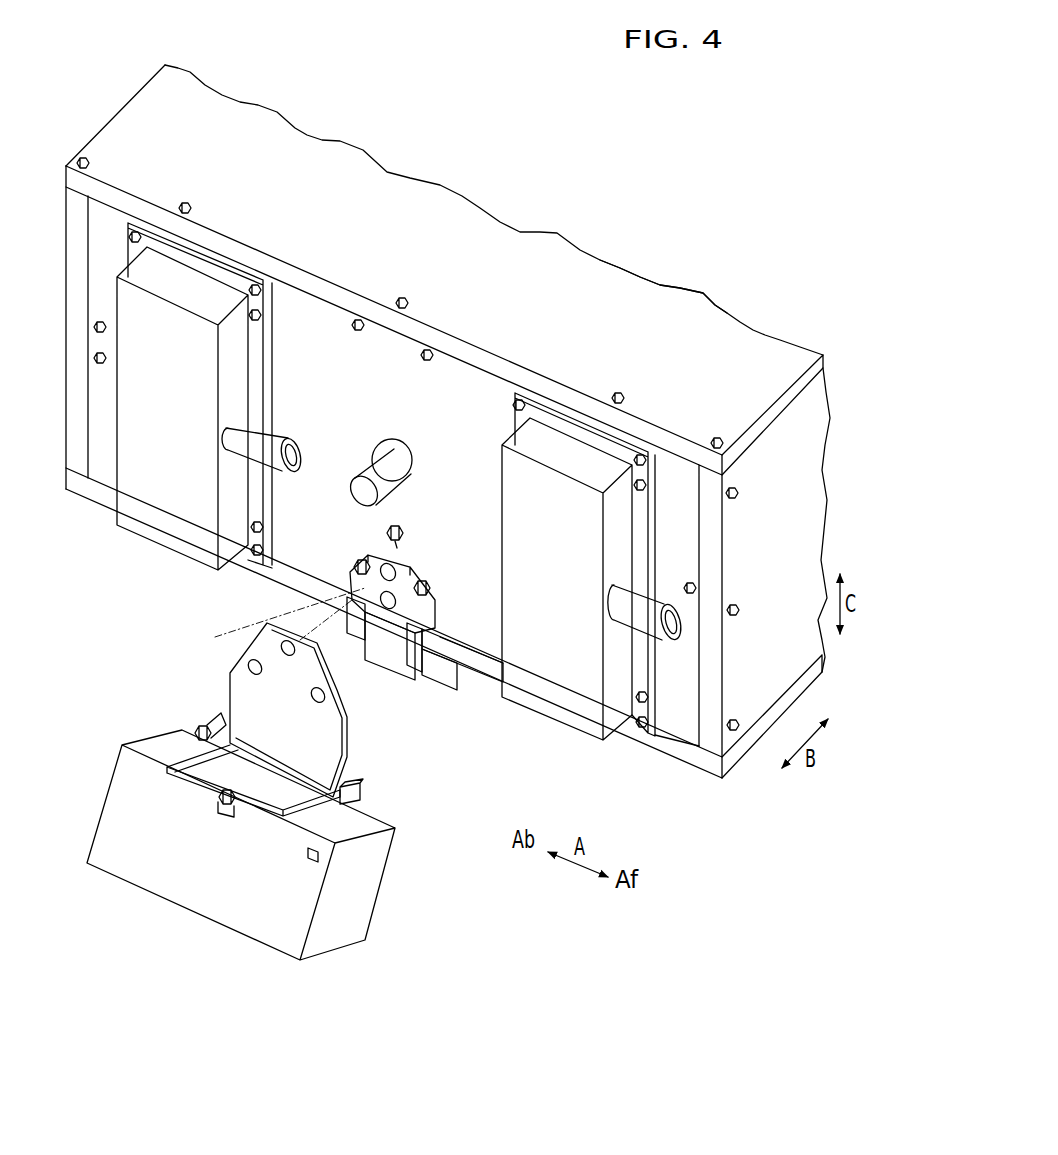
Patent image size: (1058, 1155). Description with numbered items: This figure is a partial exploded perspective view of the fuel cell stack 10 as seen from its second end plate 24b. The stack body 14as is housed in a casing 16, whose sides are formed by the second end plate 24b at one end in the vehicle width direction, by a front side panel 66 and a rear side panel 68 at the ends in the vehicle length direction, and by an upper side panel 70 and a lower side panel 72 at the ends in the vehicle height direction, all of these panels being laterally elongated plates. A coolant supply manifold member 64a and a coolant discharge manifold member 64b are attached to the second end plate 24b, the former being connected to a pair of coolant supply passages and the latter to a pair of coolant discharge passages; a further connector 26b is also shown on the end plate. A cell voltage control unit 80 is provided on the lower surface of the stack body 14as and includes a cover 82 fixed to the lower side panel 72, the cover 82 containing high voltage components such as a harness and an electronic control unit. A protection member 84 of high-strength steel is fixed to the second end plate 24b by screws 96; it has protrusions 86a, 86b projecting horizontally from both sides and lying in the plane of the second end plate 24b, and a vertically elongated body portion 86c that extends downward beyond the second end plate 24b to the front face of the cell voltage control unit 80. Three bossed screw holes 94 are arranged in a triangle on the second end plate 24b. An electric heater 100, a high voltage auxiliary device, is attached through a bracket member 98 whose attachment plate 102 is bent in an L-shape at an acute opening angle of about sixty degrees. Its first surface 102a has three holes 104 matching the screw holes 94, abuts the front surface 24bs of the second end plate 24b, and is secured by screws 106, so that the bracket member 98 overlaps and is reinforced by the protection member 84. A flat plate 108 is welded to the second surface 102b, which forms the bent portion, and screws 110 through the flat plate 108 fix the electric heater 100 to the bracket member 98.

The fuel cell stack 10 is at (346, 66).
The casing 16 is at (191, 70).
The stack body 14as is at (669, 316).
The front side panel 66 is at (777, 440).
The upper side panel 70 is at (811, 345).
The lower side panel 72 is at (738, 765).
The rear side panel 68 is at (82, 466).
The coolant supply manifold member 64a is at (158, 507).
The coolant discharge manifold member 64b is at (543, 678).
The pipe connector 26b is at (362, 472).
The screw holes 94 is at (357, 563).
The protrusion 86a is at (352, 587).
The protrusion 86b is at (437, 613).
The body portion 86c is at (397, 665).
The screws 96 is at (386, 606).
The protection member 84 is at (413, 688).
The cell voltage control unit 80 is at (467, 686).
The cover 82 is at (455, 668).
The front surface 24bs is at (493, 642).
The second end plate 24b is at (674, 720).
The attachment plate 102 is at (228, 801).
The first surface 102a is at (230, 681).
The second surface 102b is at (283, 794).
The holes 104 is at (314, 690).
The screws 106 is at (200, 730).
The bracket member 98 is at (353, 780).
The screws 110 is at (220, 806).
The flat plate 108 is at (314, 850).
The electric heater 100 is at (375, 851).